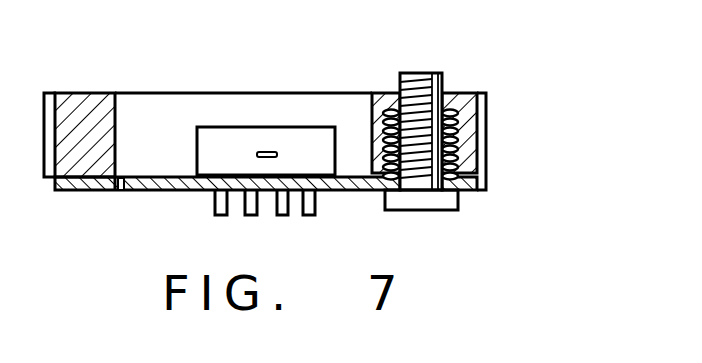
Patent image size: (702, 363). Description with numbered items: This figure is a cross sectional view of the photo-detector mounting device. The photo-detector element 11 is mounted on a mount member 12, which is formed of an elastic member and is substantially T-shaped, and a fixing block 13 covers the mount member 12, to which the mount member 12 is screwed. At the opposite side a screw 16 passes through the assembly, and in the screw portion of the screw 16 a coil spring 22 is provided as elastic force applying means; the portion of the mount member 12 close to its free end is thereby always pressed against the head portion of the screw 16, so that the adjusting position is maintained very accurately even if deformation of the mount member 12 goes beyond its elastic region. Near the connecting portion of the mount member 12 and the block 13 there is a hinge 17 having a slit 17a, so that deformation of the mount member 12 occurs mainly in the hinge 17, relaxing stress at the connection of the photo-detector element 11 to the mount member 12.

The photo-detector element 11 is at (243, 138).
The mount member 12 is at (193, 191).
The fixing block 13 is at (96, 97).
The screw 16 is at (435, 78).
The hinge 17 is at (115, 191).
The slit 17a is at (122, 191).
The coil spring 22 is at (476, 128).